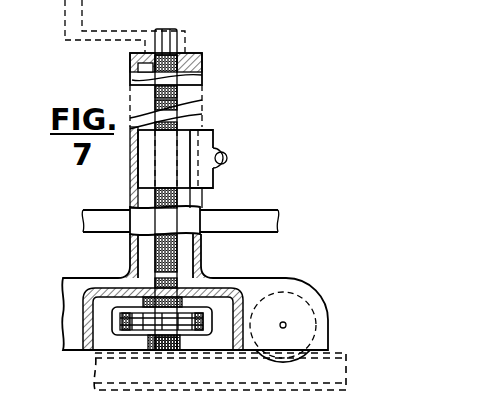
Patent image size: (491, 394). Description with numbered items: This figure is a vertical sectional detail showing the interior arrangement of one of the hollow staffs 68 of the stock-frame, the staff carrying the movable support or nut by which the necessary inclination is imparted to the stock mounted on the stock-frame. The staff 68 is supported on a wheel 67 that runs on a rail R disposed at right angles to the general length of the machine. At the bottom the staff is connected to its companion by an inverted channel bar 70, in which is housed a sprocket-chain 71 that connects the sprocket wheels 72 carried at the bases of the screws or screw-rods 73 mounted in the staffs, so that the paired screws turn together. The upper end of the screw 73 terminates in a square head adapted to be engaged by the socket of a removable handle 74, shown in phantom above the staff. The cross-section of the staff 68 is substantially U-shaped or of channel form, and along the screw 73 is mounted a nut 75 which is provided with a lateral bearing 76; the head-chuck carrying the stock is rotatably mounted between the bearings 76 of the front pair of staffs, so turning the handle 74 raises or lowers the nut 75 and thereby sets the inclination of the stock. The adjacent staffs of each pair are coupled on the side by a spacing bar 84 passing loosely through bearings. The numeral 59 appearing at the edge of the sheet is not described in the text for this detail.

The reference numeral from adjacent portion 59 is at (14, 145).
The removable handle 74 is at (95, 41).
The hollow staff 68 is at (192, 110).
The lateral bearing 76 is at (233, 138).
The nut 75 is at (147, 167).
The spacing bar 84 is at (262, 218).
The screw-rod 73 is at (152, 247).
The inverted channel bar 70 is at (93, 300).
The sprocket-chain 71 is at (203, 320).
The sprocket wheel 72 is at (183, 317).
The wheel 67 is at (290, 300).
The rail R is at (97, 373).